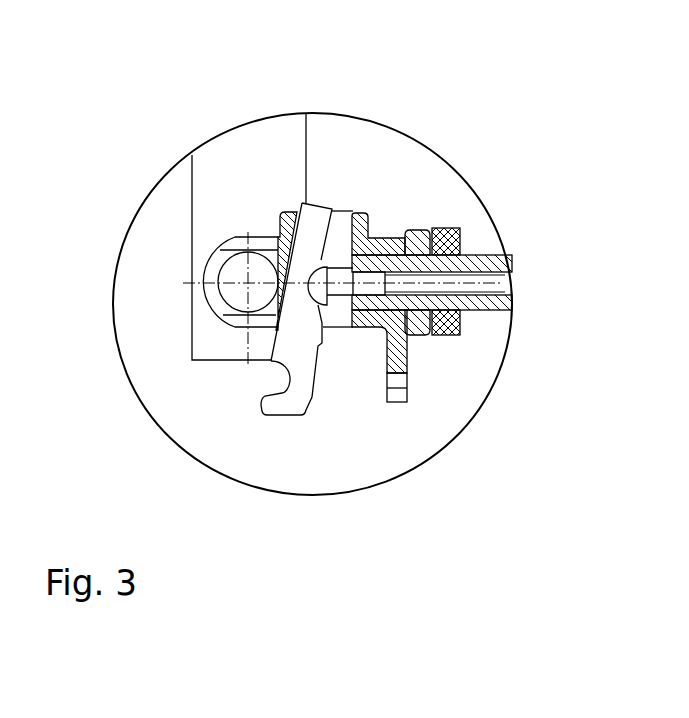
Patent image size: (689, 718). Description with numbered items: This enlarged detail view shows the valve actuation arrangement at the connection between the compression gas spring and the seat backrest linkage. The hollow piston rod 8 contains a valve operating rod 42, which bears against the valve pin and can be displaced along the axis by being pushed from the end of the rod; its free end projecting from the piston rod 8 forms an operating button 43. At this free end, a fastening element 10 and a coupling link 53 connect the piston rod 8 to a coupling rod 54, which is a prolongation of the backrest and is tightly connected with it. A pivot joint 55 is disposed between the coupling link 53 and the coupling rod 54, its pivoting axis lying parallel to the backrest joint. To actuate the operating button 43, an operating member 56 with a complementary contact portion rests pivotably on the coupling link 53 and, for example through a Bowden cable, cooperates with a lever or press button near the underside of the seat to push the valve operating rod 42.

The piston rod 8 is at (502, 263).
The fastening element 10 is at (420, 229).
The valve operating rod 42 is at (503, 288).
The operating button 43 is at (335, 278).
The coupling link 53 is at (393, 230).
The coupling rod 54 is at (239, 155).
The pivot joint 55 is at (233, 272).
The operating member 56 is at (284, 415).